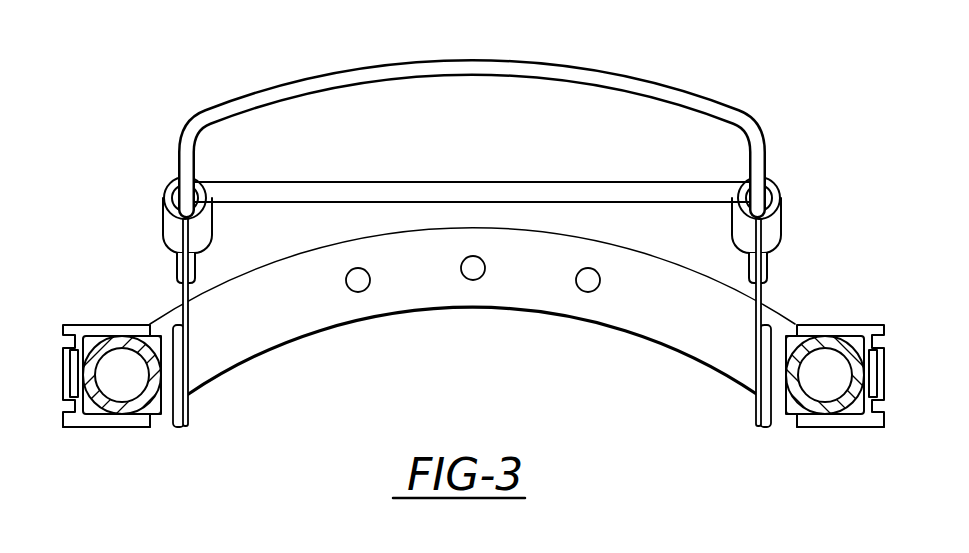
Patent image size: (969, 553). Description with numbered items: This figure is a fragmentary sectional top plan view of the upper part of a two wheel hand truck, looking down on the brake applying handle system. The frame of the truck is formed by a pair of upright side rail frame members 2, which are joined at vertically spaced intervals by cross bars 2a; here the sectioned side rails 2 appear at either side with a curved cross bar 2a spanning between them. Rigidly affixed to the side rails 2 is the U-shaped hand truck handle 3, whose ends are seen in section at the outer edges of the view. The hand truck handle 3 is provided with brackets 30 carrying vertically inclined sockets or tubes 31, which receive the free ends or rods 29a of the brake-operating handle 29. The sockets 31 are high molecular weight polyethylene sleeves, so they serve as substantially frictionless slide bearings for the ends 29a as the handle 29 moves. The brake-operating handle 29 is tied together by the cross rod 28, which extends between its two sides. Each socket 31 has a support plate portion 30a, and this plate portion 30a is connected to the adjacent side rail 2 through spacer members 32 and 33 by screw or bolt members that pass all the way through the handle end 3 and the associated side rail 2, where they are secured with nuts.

The side rail frame member 2 is at (80, 325).
The cross bar 2a is at (306, 322).
The hand truck handle 3 is at (118, 337).
The cross rod 28 is at (603, 188).
The brake-operating handle 29 is at (721, 102).
The free end rod 29a is at (787, 266).
The bracket 30 is at (160, 200).
The support plate portion 30a is at (193, 307).
The socket 31 is at (205, 226).
The spacer member 32 is at (185, 426).
The spacer member 33 is at (145, 428).